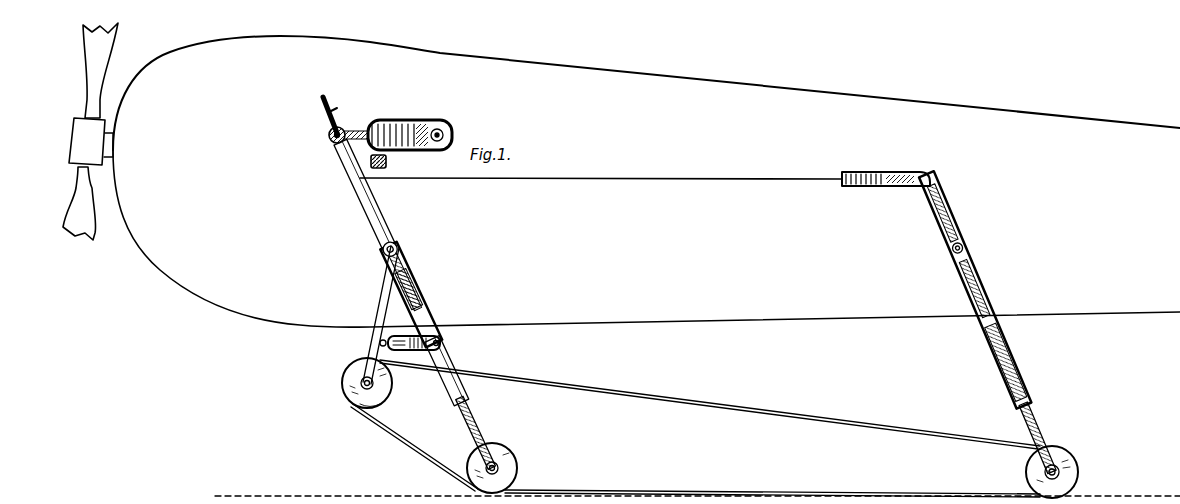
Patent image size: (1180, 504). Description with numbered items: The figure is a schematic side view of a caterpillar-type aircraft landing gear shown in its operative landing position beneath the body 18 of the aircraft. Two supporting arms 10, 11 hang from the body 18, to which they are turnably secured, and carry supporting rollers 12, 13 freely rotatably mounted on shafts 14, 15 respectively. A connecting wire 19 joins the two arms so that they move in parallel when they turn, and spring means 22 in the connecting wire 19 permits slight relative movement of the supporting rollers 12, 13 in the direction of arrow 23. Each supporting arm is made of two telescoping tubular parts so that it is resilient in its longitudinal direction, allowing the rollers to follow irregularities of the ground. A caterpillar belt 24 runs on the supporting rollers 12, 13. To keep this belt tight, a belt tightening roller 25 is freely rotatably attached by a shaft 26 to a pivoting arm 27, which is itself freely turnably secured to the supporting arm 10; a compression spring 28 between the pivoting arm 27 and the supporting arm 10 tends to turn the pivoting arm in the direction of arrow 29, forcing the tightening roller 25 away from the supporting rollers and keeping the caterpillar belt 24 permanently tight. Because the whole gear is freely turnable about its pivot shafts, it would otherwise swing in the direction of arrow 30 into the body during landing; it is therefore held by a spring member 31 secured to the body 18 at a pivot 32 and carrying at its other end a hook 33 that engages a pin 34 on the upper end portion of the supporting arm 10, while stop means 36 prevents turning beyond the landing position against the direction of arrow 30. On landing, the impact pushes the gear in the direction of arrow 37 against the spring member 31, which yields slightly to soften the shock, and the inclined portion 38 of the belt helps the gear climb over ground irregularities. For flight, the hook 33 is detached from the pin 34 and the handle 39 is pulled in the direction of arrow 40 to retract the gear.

The supporting arm 10 is at (407, 309).
The supporting arm 11 is at (989, 323).
The supporting roller 12 is at (512, 478).
The supporting roller 13 is at (1073, 480).
The shaft 14 is at (500, 464).
The shaft 15 is at (1062, 462).
The body of the aircraft 18 is at (658, 83).
The connecting wire 19 is at (648, 179).
The spring means 22 is at (870, 172).
The arrow 23 is at (790, 476).
The caterpillar belt 24 is at (770, 408).
The belt tightening roller 25 is at (362, 400).
The shaft 26 is at (343, 385).
The pivoting arm 27 is at (383, 318).
The compression spring 28 is at (420, 352).
The arrow 29 is at (353, 259).
The arrow 30 is at (1000, 322).
The spring member 31 is at (405, 120).
The pivot 32 is at (443, 127).
The hook 33 is at (328, 140).
The pin 34 is at (346, 131).
The stop means 36 is at (388, 166).
The arrow 37 is at (412, 456).
The inclined portion 38 is at (404, 438).
The handle 39 is at (331, 100).
The arrow 40 is at (330, 100).